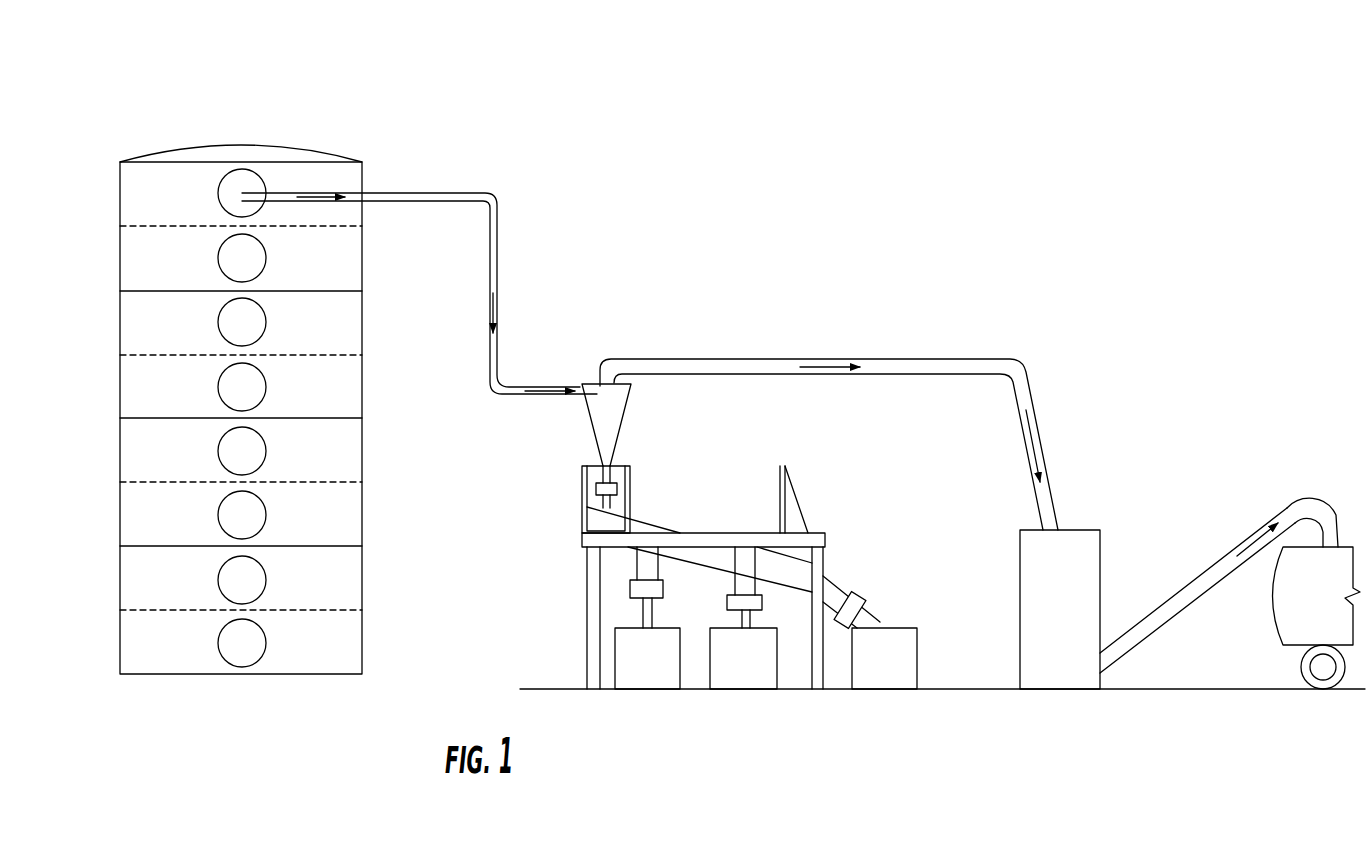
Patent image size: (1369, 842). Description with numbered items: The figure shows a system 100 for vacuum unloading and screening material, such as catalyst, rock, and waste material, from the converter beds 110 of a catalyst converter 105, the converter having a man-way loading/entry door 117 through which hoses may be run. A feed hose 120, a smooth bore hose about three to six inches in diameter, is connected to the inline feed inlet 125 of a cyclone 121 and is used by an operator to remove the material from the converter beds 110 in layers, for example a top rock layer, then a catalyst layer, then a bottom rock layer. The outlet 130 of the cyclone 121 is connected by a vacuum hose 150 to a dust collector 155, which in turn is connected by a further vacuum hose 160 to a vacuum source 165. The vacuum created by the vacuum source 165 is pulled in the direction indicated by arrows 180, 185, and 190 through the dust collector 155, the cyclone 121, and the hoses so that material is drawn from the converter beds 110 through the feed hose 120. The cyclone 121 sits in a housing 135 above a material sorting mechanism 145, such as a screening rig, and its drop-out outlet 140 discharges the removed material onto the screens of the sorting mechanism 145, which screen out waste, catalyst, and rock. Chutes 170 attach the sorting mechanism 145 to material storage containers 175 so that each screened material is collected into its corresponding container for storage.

The system 100 is at (952, 82).
The catalyst converter 105 is at (148, 146).
The converter beds 110 is at (120, 208).
The man-way loading/entry door 117 is at (260, 216).
The feed hose 120 is at (497, 259).
The cyclone 121 is at (627, 433).
The inline feed inlet 125 is at (578, 394).
The outlet 130 is at (620, 380).
The feeder housing 135 is at (603, 440).
The drop-out outlet 140 is at (595, 476).
The material sorting mechanism 145 is at (717, 528).
The vacuum hose 150 is at (997, 360).
The dust collector 155 is at (1083, 530).
The vacuum hose 160 is at (1153, 612).
The vacuum source 165 is at (1275, 632).
The chutes 170 is at (737, 620).
The material storage containers 175 is at (880, 678).
The arrow 180 is at (500, 307).
The arrow 185 is at (787, 360).
The arrow 190 is at (1240, 548).